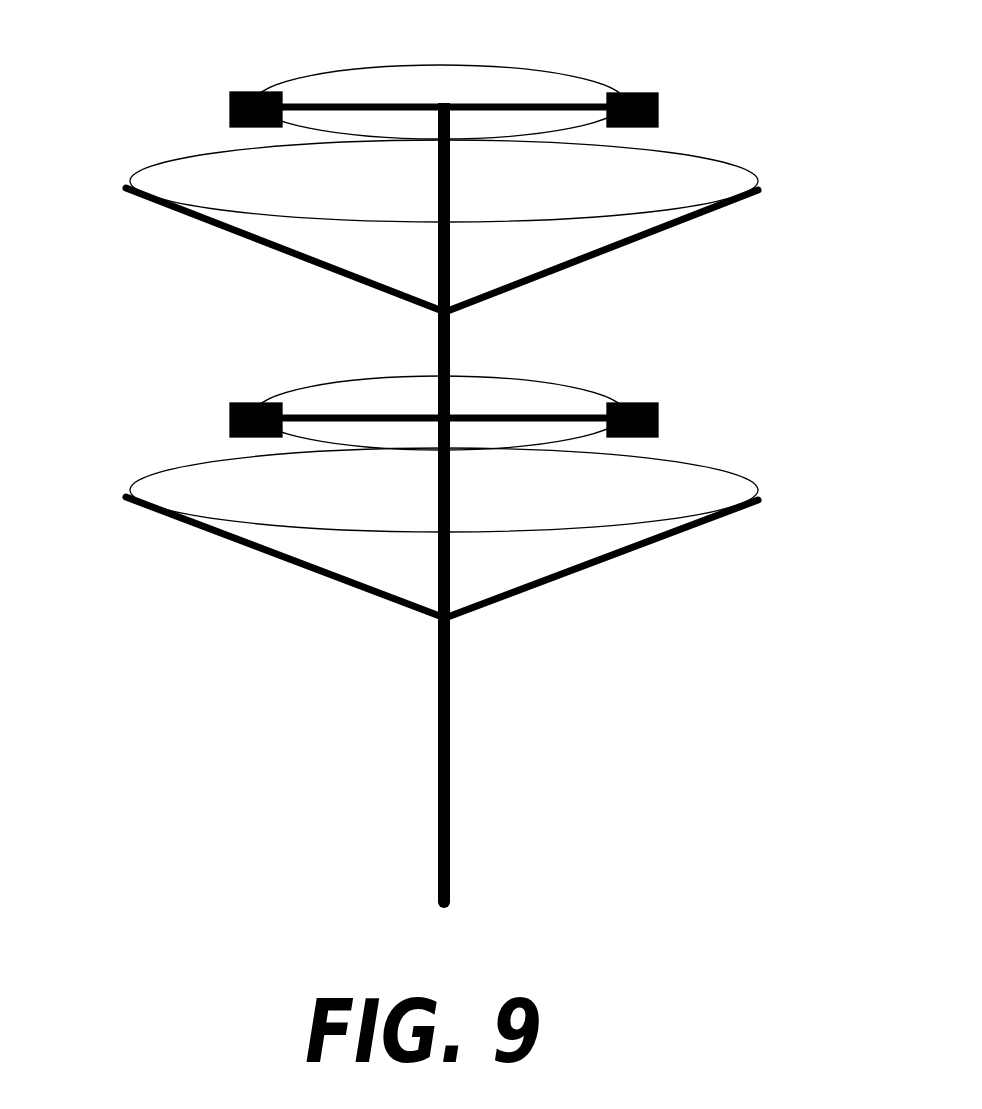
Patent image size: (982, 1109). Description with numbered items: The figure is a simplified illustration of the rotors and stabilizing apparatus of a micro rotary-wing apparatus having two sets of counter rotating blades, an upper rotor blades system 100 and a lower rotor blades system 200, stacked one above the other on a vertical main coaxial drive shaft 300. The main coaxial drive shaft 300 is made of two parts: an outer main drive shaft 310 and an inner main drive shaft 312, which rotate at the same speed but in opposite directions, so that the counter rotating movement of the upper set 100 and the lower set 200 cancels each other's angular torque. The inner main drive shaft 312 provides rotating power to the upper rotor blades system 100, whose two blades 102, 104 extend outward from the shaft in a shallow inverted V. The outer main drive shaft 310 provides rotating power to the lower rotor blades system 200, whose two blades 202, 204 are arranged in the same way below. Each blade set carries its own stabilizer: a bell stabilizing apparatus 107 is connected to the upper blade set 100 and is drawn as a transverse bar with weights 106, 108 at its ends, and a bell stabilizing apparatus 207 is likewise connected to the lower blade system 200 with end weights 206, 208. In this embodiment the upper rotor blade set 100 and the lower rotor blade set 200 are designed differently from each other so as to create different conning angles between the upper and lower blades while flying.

The upper rotor blades system 100 is at (445, 103).
The upper blade 102 is at (703, 207).
The upper blade 104 is at (197, 220).
The first right capacitive load 106 is at (617, 92).
The bell stabilizing apparatus 107 is at (383, 110).
The first left capacitive load 108 is at (240, 92).
The lower rotor blades system 200 is at (443, 413).
The lower blade 202 is at (707, 530).
The lower blade 204 is at (200, 525).
The second right capacitive load 206 is at (630, 402).
The bell stabilizing apparatus 207 is at (393, 417).
The second left capacitive load 208 is at (257, 402).
The main coaxial drive shaft 300 is at (450, 788).
The outer main drive shaft 310 is at (450, 658).
The inner main drive shaft 312 is at (450, 328).